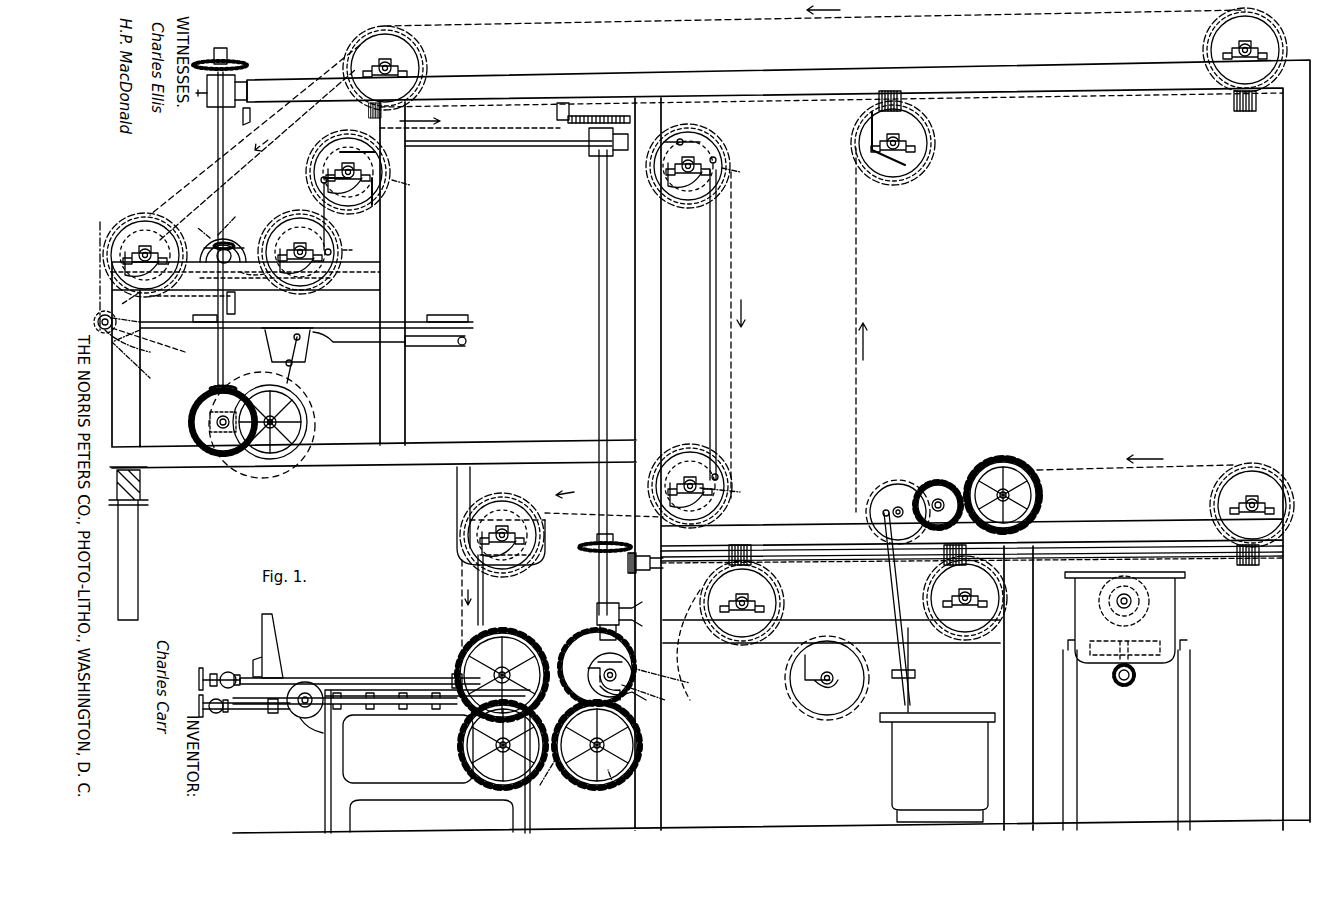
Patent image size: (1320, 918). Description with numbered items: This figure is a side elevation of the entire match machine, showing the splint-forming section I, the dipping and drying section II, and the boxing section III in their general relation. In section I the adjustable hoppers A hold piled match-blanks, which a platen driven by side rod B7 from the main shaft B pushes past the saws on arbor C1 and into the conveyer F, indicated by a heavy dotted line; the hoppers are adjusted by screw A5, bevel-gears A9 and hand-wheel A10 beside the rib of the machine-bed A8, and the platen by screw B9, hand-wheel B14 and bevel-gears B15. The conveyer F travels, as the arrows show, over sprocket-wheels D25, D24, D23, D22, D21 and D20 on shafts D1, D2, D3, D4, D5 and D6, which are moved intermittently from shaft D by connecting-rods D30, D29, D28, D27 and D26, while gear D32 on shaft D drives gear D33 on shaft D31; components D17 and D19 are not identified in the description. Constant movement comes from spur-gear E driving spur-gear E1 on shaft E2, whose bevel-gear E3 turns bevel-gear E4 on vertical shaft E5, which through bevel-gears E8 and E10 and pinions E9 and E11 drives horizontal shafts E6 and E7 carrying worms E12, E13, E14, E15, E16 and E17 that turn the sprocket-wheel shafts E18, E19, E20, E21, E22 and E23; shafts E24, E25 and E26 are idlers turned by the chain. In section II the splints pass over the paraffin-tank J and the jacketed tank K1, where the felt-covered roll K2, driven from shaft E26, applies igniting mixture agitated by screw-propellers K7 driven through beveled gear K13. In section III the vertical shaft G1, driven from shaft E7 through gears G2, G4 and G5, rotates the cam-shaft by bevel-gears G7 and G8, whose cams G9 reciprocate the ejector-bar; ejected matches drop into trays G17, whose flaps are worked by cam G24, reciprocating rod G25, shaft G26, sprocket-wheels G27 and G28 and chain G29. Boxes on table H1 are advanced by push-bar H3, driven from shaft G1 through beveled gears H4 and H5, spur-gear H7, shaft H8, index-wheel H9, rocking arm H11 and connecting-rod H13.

The splint-forming section I is at (427, 761).
The dipping and drying section II is at (1038, 546).
The boxing section III is at (339, 305).
The adjustable hopper A is at (272, 620).
The screw A5 is at (252, 711).
The machine-bed rib A8 is at (322, 677).
The bevel-gears A9 is at (217, 714).
The hand-wheel A10 is at (200, 718).
The main shaft B is at (452, 675).
The adjustable reciprocating side rod B7 is at (380, 676).
The screw B9 is at (213, 673).
The hand-wheel B14 is at (197, 672).
The bevel-gears B15 is at (232, 670).
The saw-arbor C1 is at (302, 710).
The shaft D is at (470, 752).
The shaft D1 is at (257, 155).
The shaft D2 is at (298, 228).
The shaft D3 is at (322, 172).
The shaft D4 is at (705, 145).
The shaft D5 is at (730, 493).
The shaft D6 is at (456, 533).
The shaft D17 is at (484, 598).
The connection D19 is at (515, 570).
The sprocket-wheel D20 is at (508, 498).
The sprocket-wheel D21 is at (732, 468).
The sprocket-wheel D22 is at (744, 176).
The sprocket-wheel D23 is at (415, 183).
The sprocket-wheel D24 is at (360, 248).
The sprocket-wheel D25 is at (150, 230).
The connecting-rod D26 is at (600, 505).
The connecting-rod D27 is at (708, 349).
The connecting-rod D28 is at (500, 146).
The connecting-rod D29 is at (334, 215).
The connecting-rod D30 is at (258, 283).
The shaft D31 is at (604, 745).
The gear D32 is at (550, 785).
The gear D33 is at (618, 790).
The spur-gear E is at (512, 636).
The spur-gear E1 is at (585, 658).
The shaft E2 is at (641, 693).
The bevel-gear E3 is at (645, 675).
The bevel-gear E4 is at (596, 612).
The vertical shaft E5 is at (598, 388).
The horizontal shaft E6 is at (952, 554).
The horizontal shaft E7 is at (797, 100).
The bevel-gear E8 is at (584, 545).
The pinion E9 is at (630, 576).
The bevel-gear E10 is at (580, 124).
The pinion E11 is at (556, 110).
The worm E12 is at (760, 562).
The worm E13 is at (944, 565).
The worm E14 is at (1250, 566).
The worm E15 is at (368, 118).
The worm E16 is at (912, 106).
The worm E17 is at (1244, 105).
The shaft E18 is at (766, 601).
The shaft E19 is at (965, 610).
The shaft E20 is at (1254, 485).
The shaft E21 is at (420, 60).
The shaft E22 is at (920, 146).
The shaft E23 is at (1208, 44).
The idler-shaft E24 is at (800, 678).
The idler-shaft E25 is at (1041, 496).
The idler-shaft E26 is at (898, 505).
The conveyer F is at (872, 680).
The vertical shaft G1 is at (217, 152).
The gear G2 is at (240, 59).
The gear G4 is at (199, 98).
The gear G5 is at (246, 126).
The bevel-gear G7 is at (236, 244).
The bevel-gear G8 is at (212, 250).
The cam G9 is at (234, 216).
The match-tray G17 is at (200, 323).
The cam G24 is at (137, 343).
The reciprocating rod G25 is at (159, 332).
The shaft G26 is at (143, 361).
The sprocket-wheel G27 is at (204, 225).
The sprocket-wheel G28 is at (105, 269).
The chain G29 is at (210, 296).
The table H1 is at (470, 322).
The push-bar H3 is at (440, 315).
The beveled gear H4 is at (228, 386).
The beveled gear H5 is at (191, 424).
The spur-gear H7 is at (308, 420).
The shaft H8 is at (300, 430).
The index-wheel H9 is at (306, 398).
The rocking arm H11 is at (300, 360).
The connecting-rod H13 is at (436, 346).
The paraffin-tank J is at (835, 738).
The jacketed tank K1 is at (1176, 613).
The roll K2 is at (1152, 599).
The screw-propeller K7 is at (1160, 644).
The beveled gear K13 is at (1133, 683).